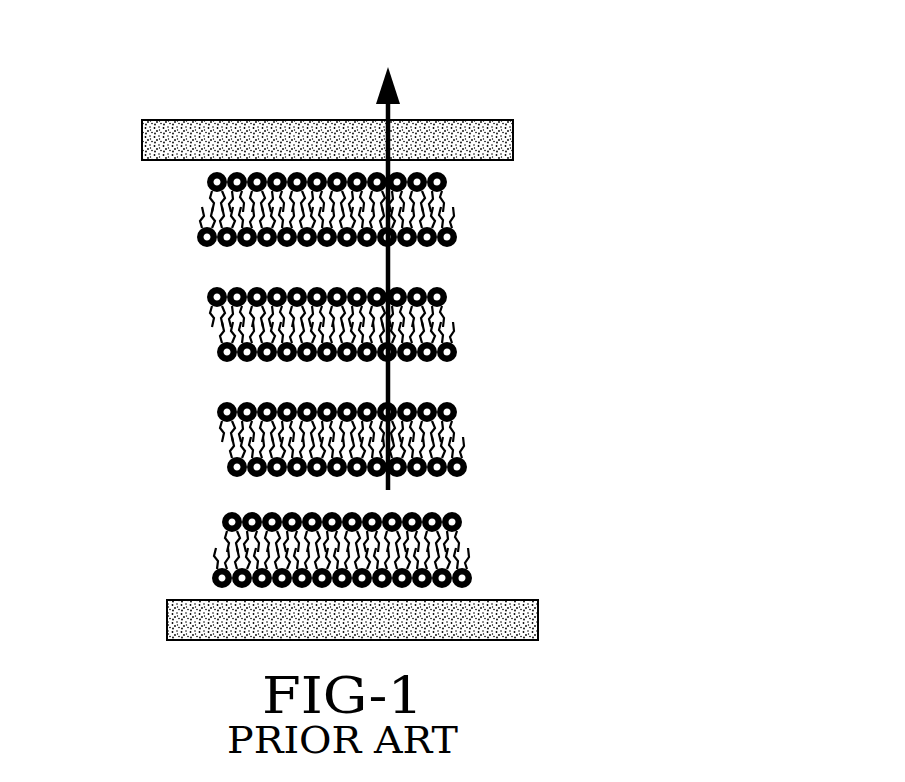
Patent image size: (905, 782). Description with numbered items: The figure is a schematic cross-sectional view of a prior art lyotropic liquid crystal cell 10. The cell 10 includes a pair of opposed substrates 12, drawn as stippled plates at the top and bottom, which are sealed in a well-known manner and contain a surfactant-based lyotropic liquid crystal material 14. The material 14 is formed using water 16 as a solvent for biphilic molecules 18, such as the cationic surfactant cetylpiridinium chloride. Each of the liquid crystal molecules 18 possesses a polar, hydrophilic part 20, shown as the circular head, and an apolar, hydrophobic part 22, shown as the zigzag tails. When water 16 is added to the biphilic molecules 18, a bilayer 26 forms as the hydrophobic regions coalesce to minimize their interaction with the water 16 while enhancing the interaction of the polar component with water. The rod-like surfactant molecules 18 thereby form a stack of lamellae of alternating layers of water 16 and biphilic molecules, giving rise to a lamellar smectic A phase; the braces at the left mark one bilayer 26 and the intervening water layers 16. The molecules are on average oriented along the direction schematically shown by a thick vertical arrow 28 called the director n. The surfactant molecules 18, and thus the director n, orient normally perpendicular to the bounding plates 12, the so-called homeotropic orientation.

The lyotropic liquid crystal cell 10 is at (106, 102).
The substrate 12 is at (488, 140).
The lyotropic liquid crystal material 14 is at (531, 300).
The water 16 is at (193, 245).
The biphilic molecules 18 is at (341, 386).
The polar parts 20 is at (462, 518).
The apolar parts 22 is at (455, 445).
The bilayer 26 is at (193, 172).
The thick vertical arrow 28 is at (392, 262).